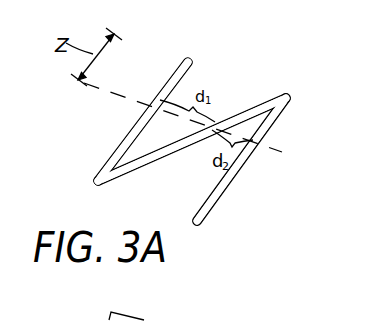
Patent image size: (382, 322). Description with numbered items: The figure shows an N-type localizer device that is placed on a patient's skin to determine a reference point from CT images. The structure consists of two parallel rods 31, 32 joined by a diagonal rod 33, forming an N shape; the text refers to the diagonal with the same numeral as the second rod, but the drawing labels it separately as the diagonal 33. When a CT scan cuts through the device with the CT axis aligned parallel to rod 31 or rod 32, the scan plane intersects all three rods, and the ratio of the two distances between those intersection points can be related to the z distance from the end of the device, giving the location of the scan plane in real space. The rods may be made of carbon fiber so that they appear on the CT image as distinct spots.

The parallel rod 31 is at (235, 173).
The parallel rod 32 is at (137, 122).
The diagonal rod 33 is at (230, 118).